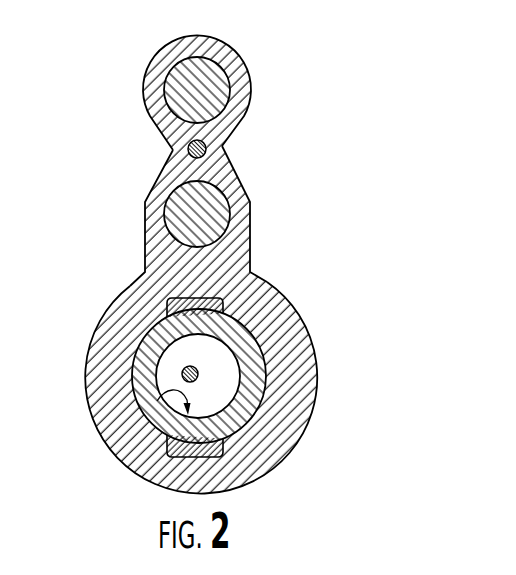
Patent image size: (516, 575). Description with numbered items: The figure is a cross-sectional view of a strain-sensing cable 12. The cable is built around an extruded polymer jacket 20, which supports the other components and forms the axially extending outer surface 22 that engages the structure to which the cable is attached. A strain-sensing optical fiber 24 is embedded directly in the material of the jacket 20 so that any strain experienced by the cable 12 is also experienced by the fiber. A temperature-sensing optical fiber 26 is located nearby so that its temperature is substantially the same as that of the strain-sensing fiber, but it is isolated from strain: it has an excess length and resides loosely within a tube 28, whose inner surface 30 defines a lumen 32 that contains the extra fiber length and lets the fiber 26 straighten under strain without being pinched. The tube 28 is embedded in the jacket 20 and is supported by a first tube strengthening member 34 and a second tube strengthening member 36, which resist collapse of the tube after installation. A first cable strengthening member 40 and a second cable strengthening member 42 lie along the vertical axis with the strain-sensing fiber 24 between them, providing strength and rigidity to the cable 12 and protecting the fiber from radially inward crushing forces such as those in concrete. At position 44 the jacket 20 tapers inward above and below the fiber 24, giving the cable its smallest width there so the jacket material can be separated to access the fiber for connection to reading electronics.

The strain-sensing cable 12 is at (256, 267).
The jacket 20 is at (290, 337).
The outer surface 22 is at (270, 278).
The strain-sensing optical fiber 24 is at (207, 145).
The temperature-sensing optical fiber 26 is at (182, 374).
The tube 28 is at (201, 393).
The inner surface 30 is at (142, 415).
The lumen 32 is at (218, 395).
The first tube strengthening member 34 is at (170, 308).
The second tube strengthening member 36 is at (212, 445).
The first cable strengthening member 40 is at (212, 85).
The second cable strengthening member 42 is at (215, 210).
The position 44 is at (158, 142).